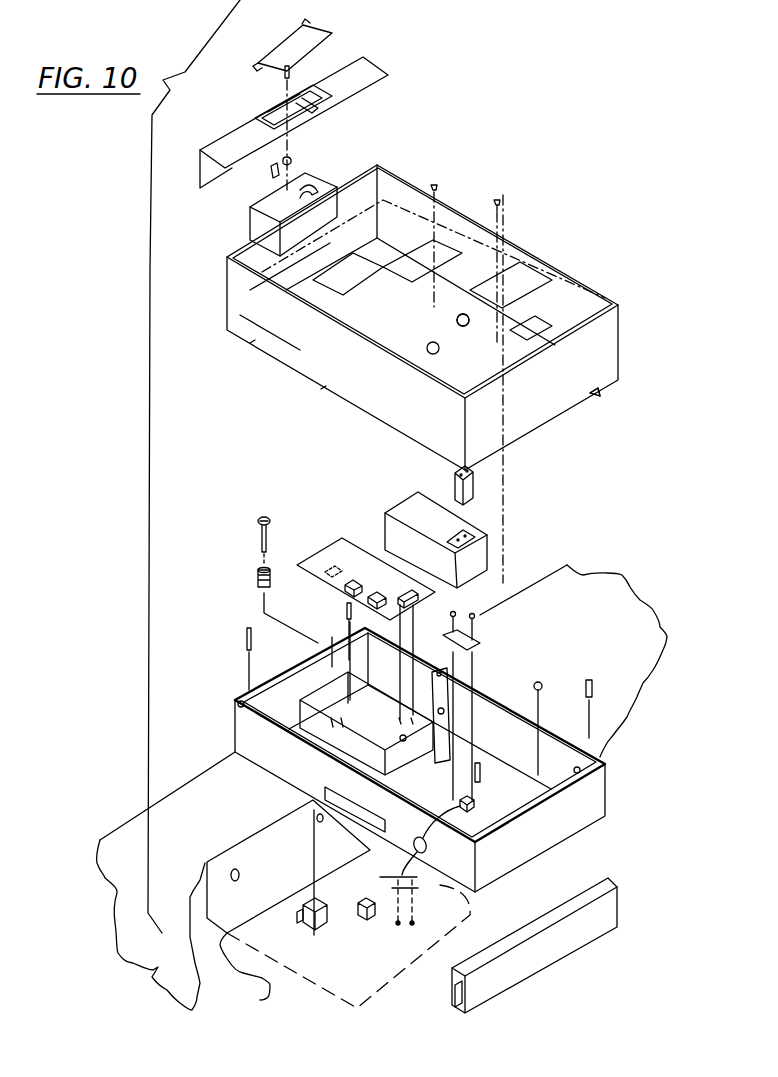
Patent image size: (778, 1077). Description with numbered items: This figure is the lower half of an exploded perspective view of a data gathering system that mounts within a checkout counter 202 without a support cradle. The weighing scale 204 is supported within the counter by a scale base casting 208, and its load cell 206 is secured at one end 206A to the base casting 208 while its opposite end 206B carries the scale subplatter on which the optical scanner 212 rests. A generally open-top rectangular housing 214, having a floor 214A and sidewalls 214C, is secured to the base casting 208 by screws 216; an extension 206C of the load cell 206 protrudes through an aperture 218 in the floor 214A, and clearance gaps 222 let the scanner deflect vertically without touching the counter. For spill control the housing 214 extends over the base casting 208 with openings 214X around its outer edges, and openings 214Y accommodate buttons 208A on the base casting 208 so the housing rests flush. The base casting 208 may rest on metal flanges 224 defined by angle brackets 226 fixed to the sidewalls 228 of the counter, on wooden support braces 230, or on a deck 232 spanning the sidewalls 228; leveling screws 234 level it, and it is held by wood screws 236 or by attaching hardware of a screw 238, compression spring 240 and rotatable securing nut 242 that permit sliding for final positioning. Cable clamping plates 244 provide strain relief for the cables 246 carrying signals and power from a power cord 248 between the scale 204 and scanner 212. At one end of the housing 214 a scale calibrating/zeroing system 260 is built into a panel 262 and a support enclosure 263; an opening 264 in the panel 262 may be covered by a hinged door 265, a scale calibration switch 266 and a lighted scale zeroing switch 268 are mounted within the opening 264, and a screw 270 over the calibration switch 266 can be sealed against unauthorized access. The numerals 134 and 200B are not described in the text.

The pin 134 is at (508, 753).
The pager assembly 200B is at (243, 464).
The checkout counter 202 is at (153, 975).
The weighing scale 204 is at (507, 475).
The load cell 206 is at (500, 530).
The end of load cell 206A is at (386, 554).
The opposite end of load cell 206B is at (482, 527).
The extension of load cell 206C is at (450, 480).
The scale base casting 208 is at (417, 776).
The buttons 208A is at (243, 698).
The optical scanner 212 is at (593, 390).
The housing 214 is at (441, 298).
The floor 214A is at (283, 350).
The sidewalls 214C is at (420, 198).
The openings 214X is at (413, 283).
The openings 214Y is at (433, 268).
The screws 216 is at (497, 203).
The aperture 218 is at (467, 342).
The clearance gaps 222 is at (280, 263).
The metal flanges 224 is at (270, 985).
The angle brackets 226 is at (287, 827).
The sidewalls of checkout counter 228 is at (228, 785).
The wooden support braces 230 is at (608, 910).
The deck 232 is at (360, 1017).
The leveling screws 234 is at (346, 613).
The wood screws 236 is at (562, 655).
The screw 238 is at (258, 540).
The compression spring 240 is at (256, 582).
The rotatable securing nut 242 is at (322, 928).
The cable clamping plates 244 is at (480, 640).
The cables 246 is at (466, 800).
The power cord 248 is at (375, 905).
The scale calibrating/zeroing system 260 is at (357, 130).
The panel 262 is at (232, 142).
The support enclosure 263 is at (340, 198).
The opening 264 is at (316, 120).
The door 265 is at (330, 33).
The scale calibration switch 266 is at (292, 160).
The lighted scale zeroing switch 268 is at (266, 178).
The screw 270 is at (290, 72).